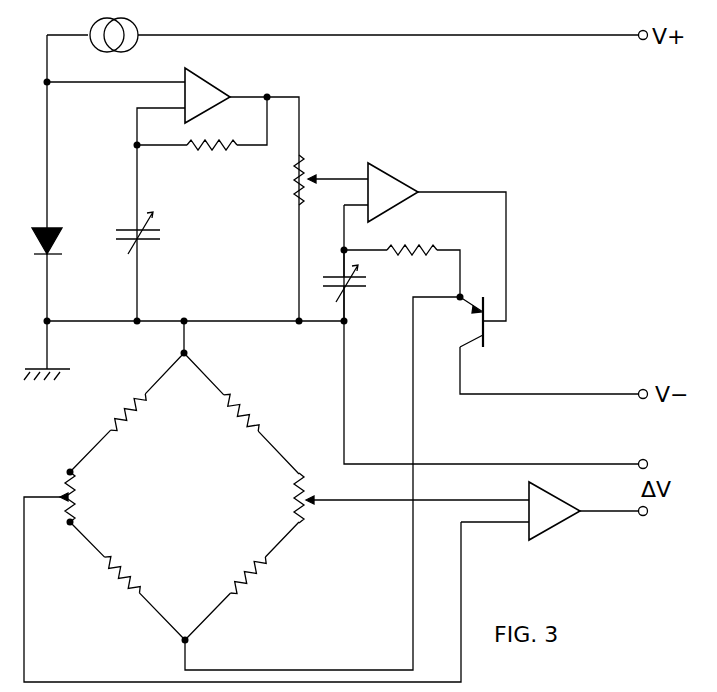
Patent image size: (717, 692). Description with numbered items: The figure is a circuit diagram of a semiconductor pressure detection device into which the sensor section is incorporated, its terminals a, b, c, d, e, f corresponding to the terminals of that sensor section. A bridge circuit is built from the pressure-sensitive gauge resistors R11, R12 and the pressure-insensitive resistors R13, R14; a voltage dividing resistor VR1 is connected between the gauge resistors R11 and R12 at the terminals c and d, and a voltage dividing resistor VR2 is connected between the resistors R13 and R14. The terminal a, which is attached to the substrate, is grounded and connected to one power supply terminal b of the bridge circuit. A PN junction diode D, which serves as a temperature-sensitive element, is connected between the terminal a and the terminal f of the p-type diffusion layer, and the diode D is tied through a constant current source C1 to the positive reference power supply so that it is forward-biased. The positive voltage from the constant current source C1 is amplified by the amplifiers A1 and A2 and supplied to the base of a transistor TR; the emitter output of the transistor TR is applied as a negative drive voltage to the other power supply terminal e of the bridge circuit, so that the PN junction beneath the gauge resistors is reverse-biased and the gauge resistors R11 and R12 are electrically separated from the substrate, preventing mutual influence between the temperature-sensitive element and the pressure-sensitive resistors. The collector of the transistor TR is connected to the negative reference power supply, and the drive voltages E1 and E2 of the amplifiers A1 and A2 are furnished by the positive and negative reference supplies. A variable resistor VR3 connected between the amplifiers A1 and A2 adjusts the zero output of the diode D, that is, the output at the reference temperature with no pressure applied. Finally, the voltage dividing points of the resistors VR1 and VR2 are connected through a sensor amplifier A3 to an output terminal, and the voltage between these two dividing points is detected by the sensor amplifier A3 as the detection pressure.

The constant current source C1 is at (126, 26).
The amplifier A1 is at (212, 74).
The amplifier A2 is at (396, 170).
The sensor amplifier A3 is at (560, 530).
The PN junction diode D is at (34, 241).
The drive voltage E1 is at (157, 233).
The drive voltage E2 is at (358, 285).
The voltage dividing resistor VR1 is at (74, 495).
The voltage dividing resistor VR2 is at (280, 498).
The variable resistor VR3 is at (325, 171).
The pressure-sensitive gauge resistor R11 is at (145, 412).
The pressure-sensitive gauge resistor R12 is at (136, 573).
The pressure-insensitive resistor R13 is at (241, 413).
The pressure-insensitive resistor R14 is at (258, 575).
The transistor TR is at (459, 322).
The terminal a is at (42, 320).
The power supply terminal b is at (188, 350).
The terminal c is at (68, 467).
The terminal d is at (68, 524).
The power supply terminal e is at (200, 638).
The terminal f is at (38, 82).